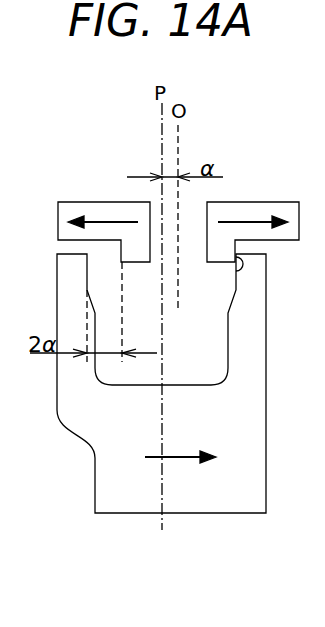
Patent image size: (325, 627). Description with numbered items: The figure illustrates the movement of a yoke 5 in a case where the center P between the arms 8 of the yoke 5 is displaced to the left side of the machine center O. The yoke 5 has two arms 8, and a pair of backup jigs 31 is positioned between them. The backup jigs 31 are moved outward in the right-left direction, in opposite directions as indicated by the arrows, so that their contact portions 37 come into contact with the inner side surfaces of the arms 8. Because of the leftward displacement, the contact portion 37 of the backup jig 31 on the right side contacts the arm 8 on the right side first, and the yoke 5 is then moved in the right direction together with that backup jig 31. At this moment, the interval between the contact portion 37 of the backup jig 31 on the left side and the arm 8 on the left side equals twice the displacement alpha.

The backup jig 31 is at (102, 210).
The arm 8 is at (72, 295).
The contact portion 37 is at (236, 268).
The yoke 5 is at (230, 522).